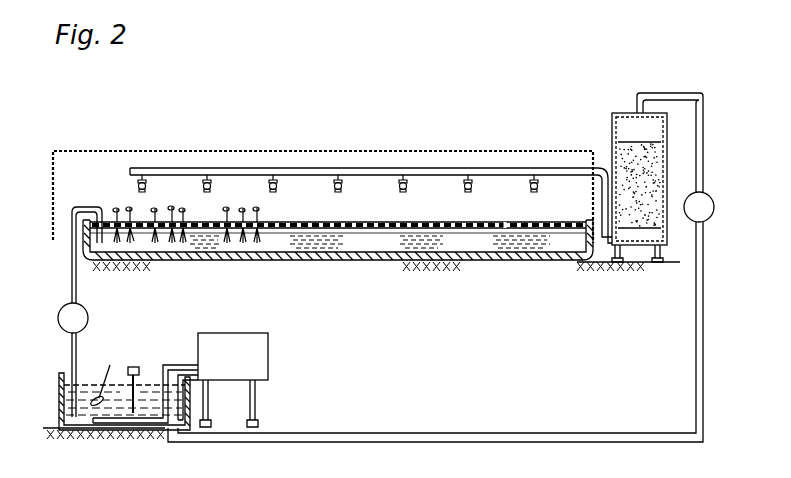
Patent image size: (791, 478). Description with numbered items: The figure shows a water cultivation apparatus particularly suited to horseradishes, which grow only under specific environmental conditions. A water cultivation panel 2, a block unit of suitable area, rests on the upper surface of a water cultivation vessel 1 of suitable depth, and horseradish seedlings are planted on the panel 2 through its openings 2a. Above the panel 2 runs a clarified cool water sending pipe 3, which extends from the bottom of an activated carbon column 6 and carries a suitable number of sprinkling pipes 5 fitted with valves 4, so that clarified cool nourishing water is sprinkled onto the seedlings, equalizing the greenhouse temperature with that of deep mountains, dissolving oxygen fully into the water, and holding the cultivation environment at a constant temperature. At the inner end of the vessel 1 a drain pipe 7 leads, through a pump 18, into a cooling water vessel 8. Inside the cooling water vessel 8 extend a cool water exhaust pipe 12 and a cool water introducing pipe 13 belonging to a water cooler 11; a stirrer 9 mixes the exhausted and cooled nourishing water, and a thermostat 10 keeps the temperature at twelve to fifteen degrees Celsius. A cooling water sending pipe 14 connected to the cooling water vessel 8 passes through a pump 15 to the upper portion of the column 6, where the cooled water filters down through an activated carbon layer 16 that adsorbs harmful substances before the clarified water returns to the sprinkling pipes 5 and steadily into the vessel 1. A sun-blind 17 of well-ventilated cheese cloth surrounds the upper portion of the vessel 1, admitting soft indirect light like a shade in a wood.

The water cultivation vessel 1 is at (490, 261).
The water cultivation panel 2 is at (368, 225).
The planting hole 2a is at (506, 226).
The clarified cool water sending pipe 3 is at (422, 168).
The valve 4 is at (334, 179).
The sprinkling pipe 5 is at (465, 179).
The activated carbon column 6 is at (612, 132).
The drain pipe 7 is at (72, 272).
The cooling water vessel 8 is at (59, 395).
The stirrer 9 is at (97, 397).
The thermostat 10 is at (133, 367).
The water cooler 11 is at (235, 333).
The cool water exhaust pipe 12 is at (163, 380).
The cool water introducing pipe 13 is at (178, 385).
The cooling water sending pipe 14 is at (703, 132).
The pump 15 is at (713, 203).
The activated carbon layer 16 is at (658, 165).
The sun-blind 17 is at (239, 151).
The pump 18 is at (58, 318).